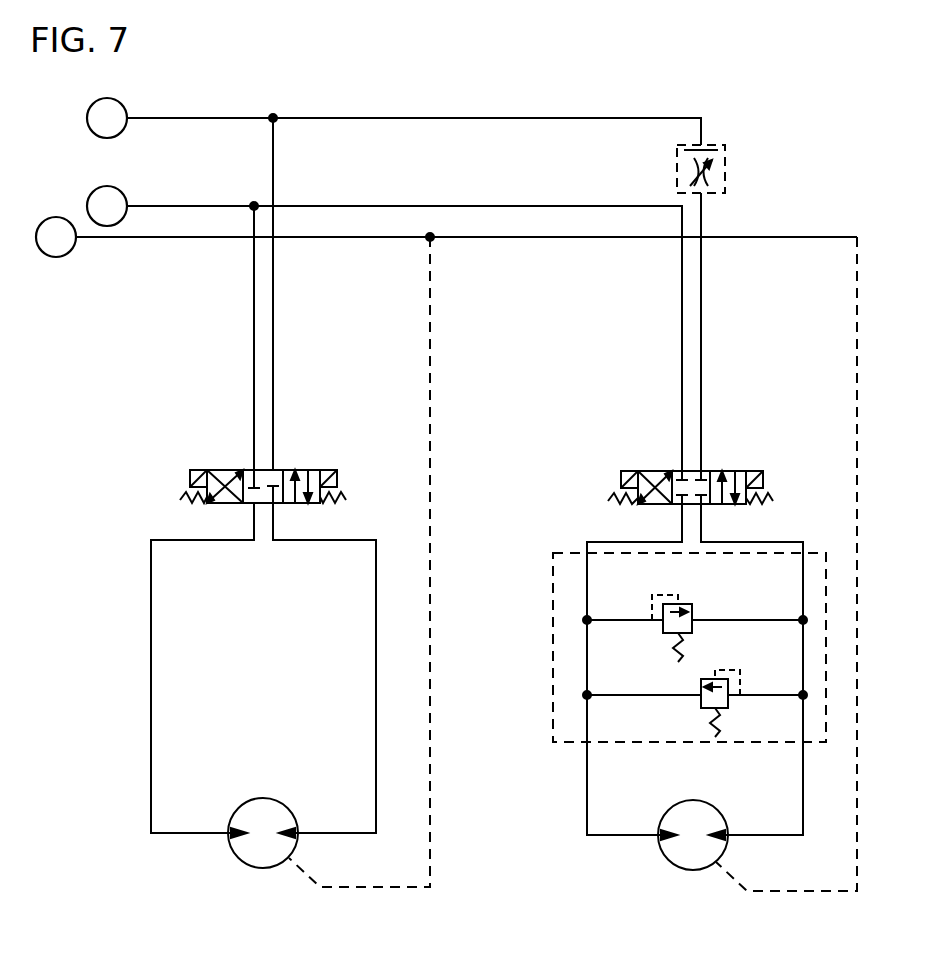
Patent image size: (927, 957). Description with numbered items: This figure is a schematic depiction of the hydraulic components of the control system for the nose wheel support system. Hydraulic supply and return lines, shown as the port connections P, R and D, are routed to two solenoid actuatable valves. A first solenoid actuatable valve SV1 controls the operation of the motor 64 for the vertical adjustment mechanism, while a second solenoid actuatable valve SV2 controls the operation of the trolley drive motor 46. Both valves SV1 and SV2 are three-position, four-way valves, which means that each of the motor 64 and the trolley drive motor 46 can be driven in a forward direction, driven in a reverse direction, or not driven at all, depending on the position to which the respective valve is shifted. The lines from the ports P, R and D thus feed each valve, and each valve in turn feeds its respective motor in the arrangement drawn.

The pressure port P is at (107, 118).
The return port R is at (107, 206).
The drain port D is at (56, 237).
The first solenoid actuatable valve SV1 is at (220, 467).
The second solenoid actuatable valve SV2 is at (657, 463).
The motor 64 is at (240, 848).
The trolley drive motor 46 is at (671, 852).